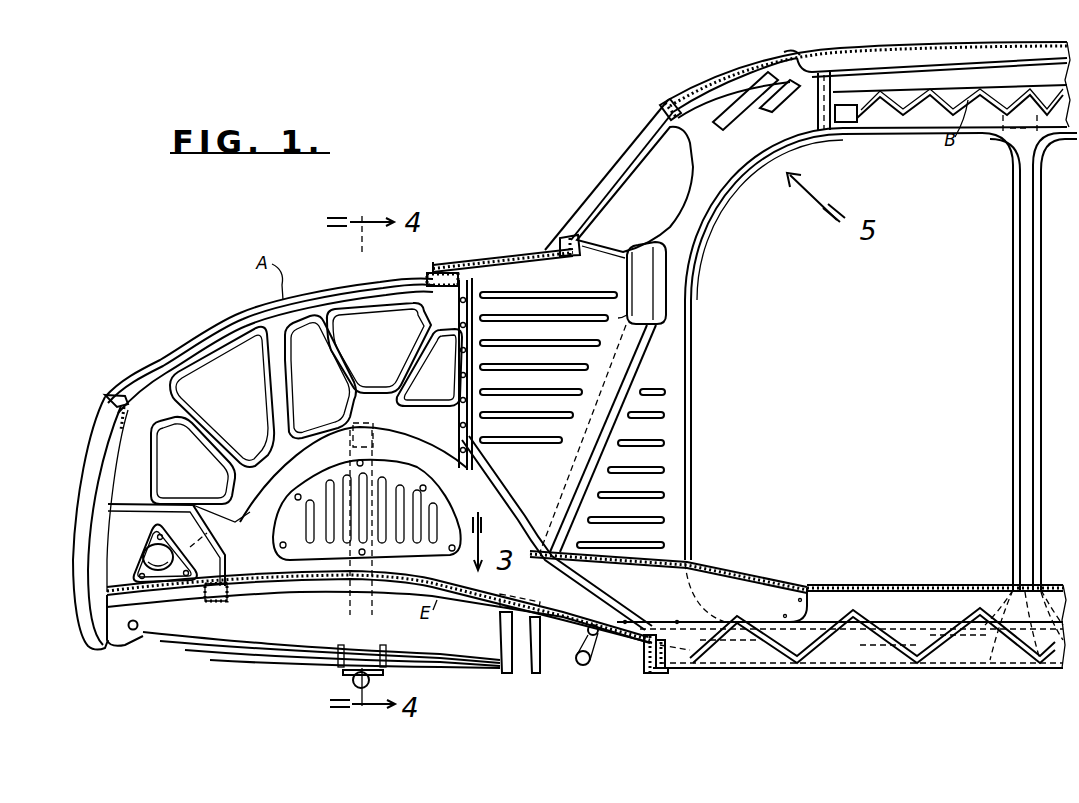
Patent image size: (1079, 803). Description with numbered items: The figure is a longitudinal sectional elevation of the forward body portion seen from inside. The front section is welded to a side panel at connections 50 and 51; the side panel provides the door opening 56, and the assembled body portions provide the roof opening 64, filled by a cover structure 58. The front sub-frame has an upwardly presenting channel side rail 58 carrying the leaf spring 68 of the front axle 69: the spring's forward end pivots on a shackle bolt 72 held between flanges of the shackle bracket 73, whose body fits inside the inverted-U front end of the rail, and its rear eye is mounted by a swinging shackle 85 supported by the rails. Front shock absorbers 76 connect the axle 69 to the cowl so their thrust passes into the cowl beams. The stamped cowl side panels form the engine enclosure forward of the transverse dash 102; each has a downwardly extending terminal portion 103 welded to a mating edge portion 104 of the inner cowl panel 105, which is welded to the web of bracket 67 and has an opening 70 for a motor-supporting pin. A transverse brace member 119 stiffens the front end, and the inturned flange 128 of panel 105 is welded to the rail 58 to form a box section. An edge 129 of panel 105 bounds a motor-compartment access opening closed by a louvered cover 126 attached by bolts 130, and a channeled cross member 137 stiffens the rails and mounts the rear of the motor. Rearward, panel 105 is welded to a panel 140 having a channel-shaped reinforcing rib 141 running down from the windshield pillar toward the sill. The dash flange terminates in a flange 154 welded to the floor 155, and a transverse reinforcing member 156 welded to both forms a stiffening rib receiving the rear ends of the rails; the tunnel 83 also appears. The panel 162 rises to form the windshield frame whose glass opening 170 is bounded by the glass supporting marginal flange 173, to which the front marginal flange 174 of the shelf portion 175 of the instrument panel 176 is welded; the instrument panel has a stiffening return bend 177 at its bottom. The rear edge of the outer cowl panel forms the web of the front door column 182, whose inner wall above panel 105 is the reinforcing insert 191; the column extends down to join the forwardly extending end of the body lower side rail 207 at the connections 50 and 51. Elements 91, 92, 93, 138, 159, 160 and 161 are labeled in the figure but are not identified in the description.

The welded connection 50 is at (835, 130).
The welded connection 51 is at (745, 650).
The door opening 56 is at (912, 343).
The channel side rail 58 is at (300, 594).
The roof opening 64 is at (933, 52).
The bracket 67 is at (150, 532).
The leaf spring 68 is at (470, 670).
The front axle 69 is at (350, 680).
The opening 70 is at (146, 557).
The shackle bolt 72 is at (132, 632).
The shackle bracket 73 is at (185, 592).
The front shock absorber 76 is at (340, 596).
The tunnel 83 is at (950, 585).
The swinging shackle 85 is at (575, 665).
The floor bracket 91 is at (790, 610).
The dash floor bar 92 is at (740, 560).
The sill zigzag truss 93 is at (975, 618).
The transverse dash 102 is at (398, 432).
The terminal portion 103 is at (88, 645).
The mating edge portion 104 is at (112, 455).
The inner cowl panel 105 is at (265, 370).
The transverse brace member 119 is at (125, 408).
The cover 126 is at (430, 497).
The flange 128 is at (500, 497).
The edge 129 is at (375, 460).
The bolts 130 is at (423, 485).
The channeled cross member 137 is at (500, 628).
The side panel 138 is at (215, 602).
The panel 140 is at (486, 262).
The reinforcing rib 141 is at (620, 380).
The flange 154 is at (640, 660).
The floor 155 is at (865, 668).
The transverse reinforcing member 156 is at (668, 665).
The louver slots 159 is at (480, 295).
The dash side flange 160 is at (427, 270).
The dash corner 161 is at (425, 262).
The panel 162 is at (545, 248).
The glass receiving opening 170 is at (605, 200).
The glass supporting marginal flange 173 is at (660, 105).
The front marginal flange 174 is at (550, 268).
The shelf portion 175 is at (622, 272).
The instrument panel 176 is at (700, 258).
The stiffening return bend 177 is at (615, 320).
The front door column 182 is at (692, 352).
The reinforcing insert 191 is at (688, 190).
The body lower side rail 207 is at (955, 665).